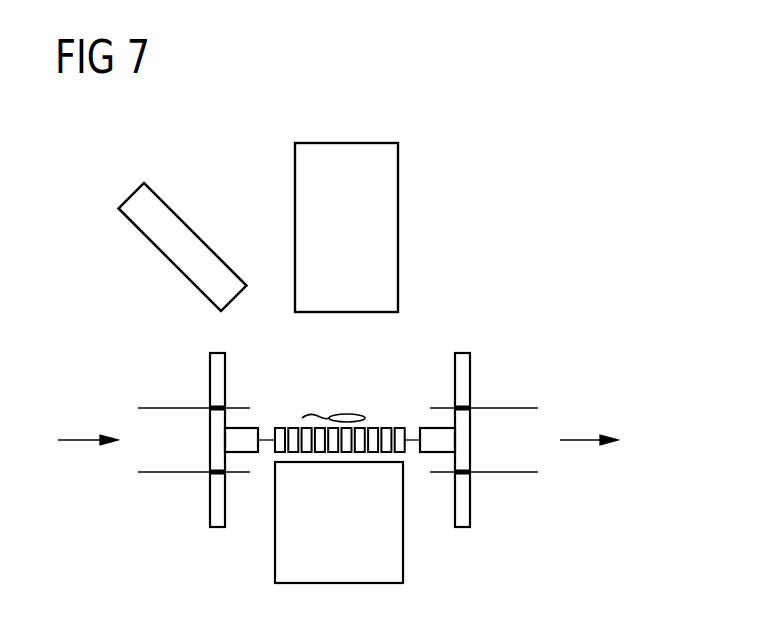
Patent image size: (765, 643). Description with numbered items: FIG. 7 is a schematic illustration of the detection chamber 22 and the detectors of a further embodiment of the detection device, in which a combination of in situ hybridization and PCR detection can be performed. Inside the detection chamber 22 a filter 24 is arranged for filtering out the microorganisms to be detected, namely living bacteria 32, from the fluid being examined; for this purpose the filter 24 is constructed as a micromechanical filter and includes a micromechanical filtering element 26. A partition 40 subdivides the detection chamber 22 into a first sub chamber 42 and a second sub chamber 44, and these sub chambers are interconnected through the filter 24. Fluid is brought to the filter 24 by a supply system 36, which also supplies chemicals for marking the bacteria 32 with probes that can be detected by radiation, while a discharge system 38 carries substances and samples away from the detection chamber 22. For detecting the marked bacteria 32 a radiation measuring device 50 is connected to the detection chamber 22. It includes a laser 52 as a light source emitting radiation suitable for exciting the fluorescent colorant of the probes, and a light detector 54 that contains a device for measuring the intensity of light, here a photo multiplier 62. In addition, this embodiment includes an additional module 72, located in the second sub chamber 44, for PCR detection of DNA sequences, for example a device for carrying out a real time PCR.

The detection chamber 22 is at (470, 507).
The filter 24 is at (479, 406).
The micromechanical filtering element 26 is at (385, 428).
The living bacteria 32 is at (347, 413).
The supply system 36 is at (80, 440).
The discharge system 38 is at (580, 440).
The partition 40 is at (250, 428).
The first sub chamber 42 is at (347, 388).
The second sub chamber 44 is at (249, 528).
The radiation measuring device 50 is at (215, 190).
The laser 52 is at (133, 193).
The light detector 54 is at (428, 141).
The photo multiplier 62 is at (398, 213).
The additional module 72 is at (356, 558).